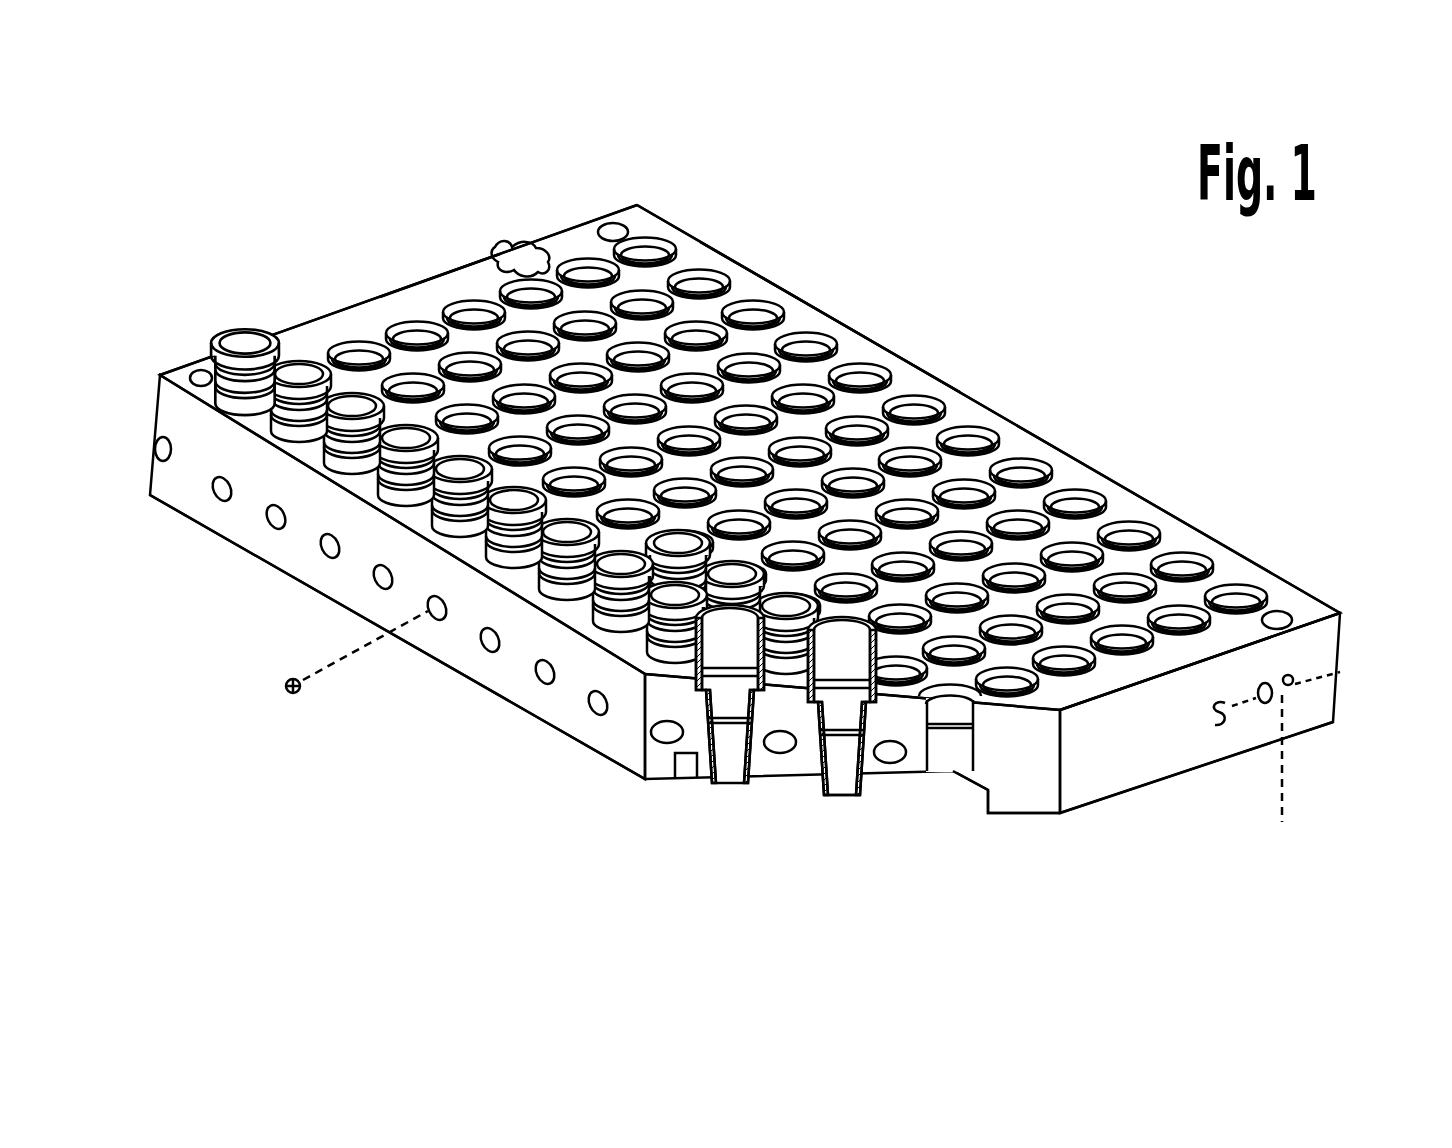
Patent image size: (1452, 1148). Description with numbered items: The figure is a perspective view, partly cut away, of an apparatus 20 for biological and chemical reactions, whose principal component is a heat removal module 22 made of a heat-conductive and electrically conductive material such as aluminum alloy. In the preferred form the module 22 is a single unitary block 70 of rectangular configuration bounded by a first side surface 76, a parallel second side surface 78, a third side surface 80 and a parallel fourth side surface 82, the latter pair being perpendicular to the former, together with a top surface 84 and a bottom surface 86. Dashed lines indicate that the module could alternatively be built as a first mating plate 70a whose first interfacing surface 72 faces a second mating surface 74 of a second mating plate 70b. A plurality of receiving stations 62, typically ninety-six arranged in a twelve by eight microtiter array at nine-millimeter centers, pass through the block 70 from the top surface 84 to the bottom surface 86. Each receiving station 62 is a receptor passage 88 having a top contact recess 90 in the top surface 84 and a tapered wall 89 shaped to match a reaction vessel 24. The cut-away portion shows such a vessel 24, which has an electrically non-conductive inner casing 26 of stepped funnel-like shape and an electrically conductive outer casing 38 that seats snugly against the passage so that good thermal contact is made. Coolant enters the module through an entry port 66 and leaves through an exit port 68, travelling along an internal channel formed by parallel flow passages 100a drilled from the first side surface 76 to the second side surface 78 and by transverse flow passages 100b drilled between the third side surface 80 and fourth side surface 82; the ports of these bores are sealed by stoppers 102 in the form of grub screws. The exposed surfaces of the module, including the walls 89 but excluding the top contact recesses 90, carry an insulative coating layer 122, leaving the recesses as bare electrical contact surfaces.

The apparatus 20 is at (958, 228).
The heat removal module 22 is at (678, 201).
The reaction vessel 24 is at (843, 800).
The inner casing 26 is at (807, 690).
The outer casing 38 is at (817, 798).
The receiving station 62 is at (950, 410).
The entry port 66 is at (198, 365).
The exit port 68 is at (1295, 612).
The block 70 is at (440, 272).
The first mating plate 70a is at (1330, 648).
The second mating plate 70b is at (1320, 727).
The first interfacing surface 72 is at (1342, 690).
The second mating surface 74 is at (1304, 770).
The first side surface 76 is at (210, 505).
The second side surface 78 is at (713, 247).
The third side surface 80 is at (1093, 767).
The fourth side surface 82 is at (330, 310).
The top surface 84 is at (765, 290).
The bottom surface 86 is at (285, 568).
The receptor passage 88 is at (1076, 510).
The wall 89 is at (958, 763).
The top contact recess 90 is at (838, 328).
The flow passage 100a is at (540, 682).
The flow passage 100b is at (1262, 705).
The stopper 102 is at (284, 700).
The coating layer 122 is at (528, 254).